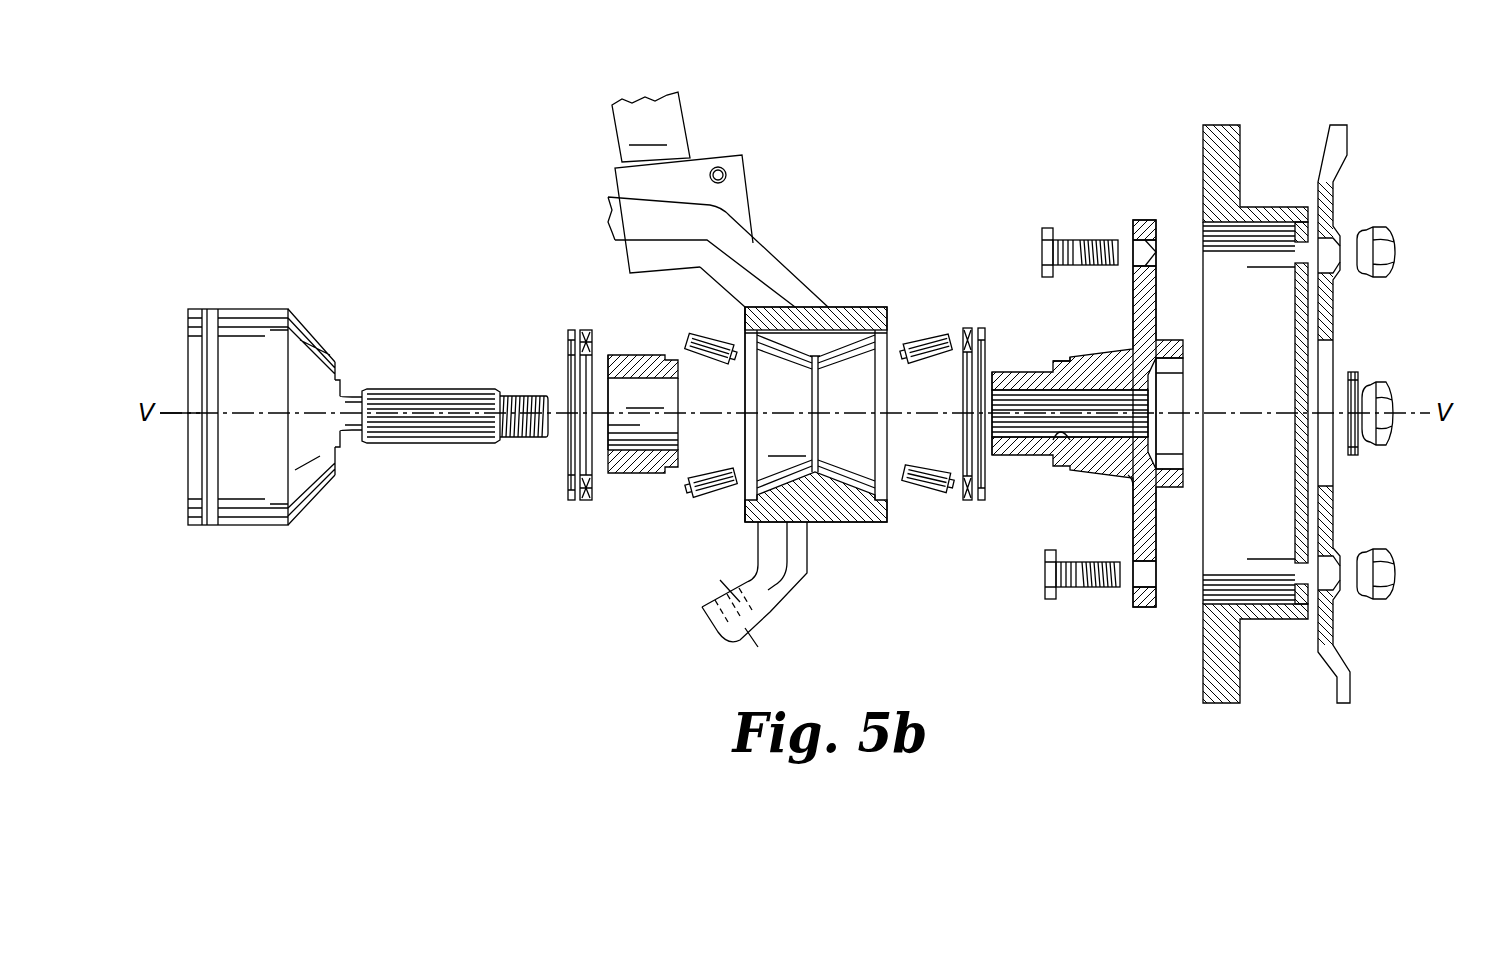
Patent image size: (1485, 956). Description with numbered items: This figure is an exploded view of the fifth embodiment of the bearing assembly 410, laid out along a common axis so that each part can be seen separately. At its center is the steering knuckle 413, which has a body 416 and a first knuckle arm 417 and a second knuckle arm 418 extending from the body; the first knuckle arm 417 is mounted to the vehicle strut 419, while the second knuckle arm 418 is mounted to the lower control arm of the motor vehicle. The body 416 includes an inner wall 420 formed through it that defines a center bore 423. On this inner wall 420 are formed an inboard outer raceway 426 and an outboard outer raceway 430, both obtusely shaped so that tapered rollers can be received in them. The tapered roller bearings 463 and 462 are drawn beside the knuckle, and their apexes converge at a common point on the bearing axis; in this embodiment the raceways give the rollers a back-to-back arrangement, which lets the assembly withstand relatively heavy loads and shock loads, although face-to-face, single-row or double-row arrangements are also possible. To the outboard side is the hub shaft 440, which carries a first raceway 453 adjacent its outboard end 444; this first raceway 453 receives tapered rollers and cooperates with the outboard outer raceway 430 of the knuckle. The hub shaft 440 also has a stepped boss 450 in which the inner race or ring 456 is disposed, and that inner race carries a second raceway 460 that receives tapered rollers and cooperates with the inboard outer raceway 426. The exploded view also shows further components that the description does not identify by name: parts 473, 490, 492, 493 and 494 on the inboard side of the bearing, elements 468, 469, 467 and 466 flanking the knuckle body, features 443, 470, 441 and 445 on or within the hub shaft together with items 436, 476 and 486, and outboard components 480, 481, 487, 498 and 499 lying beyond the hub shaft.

The bearing assembly 410 is at (480, 145).
The constant velocity joint 473 is at (254, 296).
The joint housing 490 is at (255, 527).
The stub shaft 492 is at (415, 447).
The shaft splines 493 is at (437, 388).
The threaded end 494 is at (528, 395).
The seal 468 is at (568, 500).
The seal 469 is at (587, 500).
The inner race 456 is at (644, 414).
The second raceway 460 is at (638, 355).
The tapered roller bearings 463 is at (690, 340).
The center bore 423 is at (816, 414).
The body 416 is at (833, 322).
The inboard outer raceway 426 is at (790, 338).
The outboard outer raceway 430 is at (885, 330).
The inner wall 420 is at (853, 480).
The steering knuckle 413 is at (740, 516).
The strut 419 is at (651, 127).
The first knuckle arm 417 is at (752, 250).
The second knuckle arm 418 is at (800, 578).
The tapered roller bearings 462 is at (935, 330).
The seal 467 is at (967, 500).
The seal 466 is at (982, 500).
The hub shaft 440 is at (1055, 362).
The stepped boss 450 is at (1012, 370).
The first raceway 453 is at (1072, 357).
The hub bore 443 is at (1025, 418).
The bore splines 470 is at (1060, 428).
The spline groove 441 is at (1062, 432).
The outboard end 444 is at (1127, 477).
The spline end 445 is at (1133, 425).
The hub flange 436 is at (1132, 296).
The bolt hole 476 is at (1155, 250).
The wheel bolt 486 is at (1063, 240).
The brake rotor 480 is at (1243, 143).
The wheel 481 is at (1345, 158).
The lug nut 487 is at (1393, 234).
The axle nut 498 is at (1376, 382).
The washer 499 is at (1358, 455).